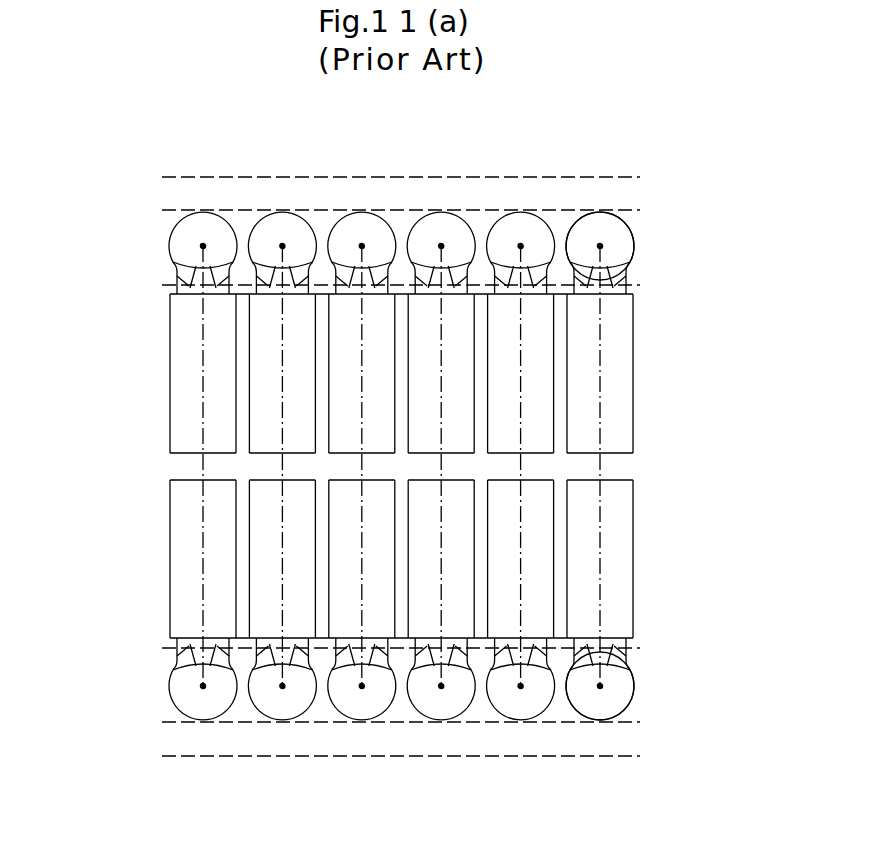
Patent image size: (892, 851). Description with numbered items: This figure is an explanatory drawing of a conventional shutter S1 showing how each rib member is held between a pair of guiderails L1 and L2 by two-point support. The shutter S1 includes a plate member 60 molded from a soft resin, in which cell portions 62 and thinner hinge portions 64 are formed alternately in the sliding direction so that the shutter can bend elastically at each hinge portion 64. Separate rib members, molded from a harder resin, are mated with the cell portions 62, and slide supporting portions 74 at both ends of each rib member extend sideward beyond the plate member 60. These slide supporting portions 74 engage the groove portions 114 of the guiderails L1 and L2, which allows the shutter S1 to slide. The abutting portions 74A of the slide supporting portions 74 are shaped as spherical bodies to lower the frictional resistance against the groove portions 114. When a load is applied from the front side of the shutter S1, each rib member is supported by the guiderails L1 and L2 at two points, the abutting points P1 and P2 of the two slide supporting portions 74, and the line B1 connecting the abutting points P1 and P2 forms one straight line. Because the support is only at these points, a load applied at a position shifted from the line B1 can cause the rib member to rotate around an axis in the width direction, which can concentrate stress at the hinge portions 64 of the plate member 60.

The slide supporting portion 74 is at (202, 208).
The abutting portion 74A is at (197, 233).
The abutting point P2 is at (203, 246).
The abutting point P1 is at (203, 686).
The guiderail L2 is at (634, 175).
The guiderail L1 is at (640, 758).
The groove portion 114 is at (634, 243).
The shutter S1 is at (684, 283).
The plate member 60 is at (166, 304).
The cell portion 62 is at (190, 325).
The hinge portion 64 is at (240, 397).
The line B1 is at (199, 358).